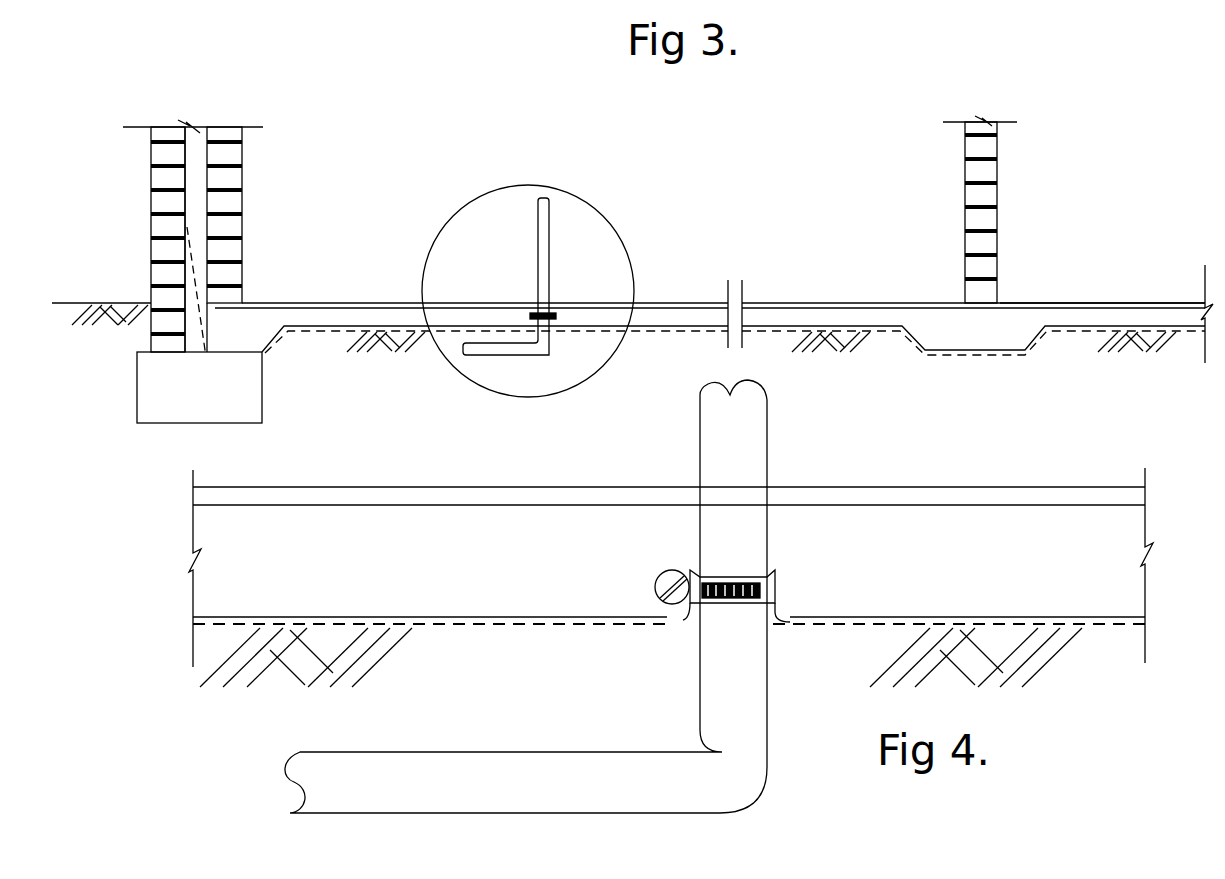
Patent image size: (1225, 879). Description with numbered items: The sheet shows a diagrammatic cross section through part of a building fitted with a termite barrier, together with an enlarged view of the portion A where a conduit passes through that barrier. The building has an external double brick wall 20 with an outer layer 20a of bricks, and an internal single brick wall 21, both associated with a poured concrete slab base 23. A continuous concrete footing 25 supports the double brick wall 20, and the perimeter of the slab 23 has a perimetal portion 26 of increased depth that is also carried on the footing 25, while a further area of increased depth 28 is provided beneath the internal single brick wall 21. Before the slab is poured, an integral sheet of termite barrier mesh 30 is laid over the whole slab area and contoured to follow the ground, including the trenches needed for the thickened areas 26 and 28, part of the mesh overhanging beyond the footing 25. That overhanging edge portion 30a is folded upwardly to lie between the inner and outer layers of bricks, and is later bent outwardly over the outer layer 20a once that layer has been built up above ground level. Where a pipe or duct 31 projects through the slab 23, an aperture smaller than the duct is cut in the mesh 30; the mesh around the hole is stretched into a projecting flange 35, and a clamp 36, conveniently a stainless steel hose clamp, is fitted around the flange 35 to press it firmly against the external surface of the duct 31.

In FIG. 3, the external double brick wall 20 is at (270, 133).
In FIG. 3, the outer layer of bricks 20a is at (165, 224).
In FIG. 3, the internal single brick wall 21 is at (1012, 162).
In FIG. 3, the poured concrete slab base 23 is at (332, 308).
In FIG. 4, the poured concrete slab base 23 is at (508, 520).
In FIG. 3, the continuous concrete footing 25 is at (252, 408).
In FIG. 3, the perimetal portion of increased depth 26 is at (228, 327).
In FIG. 3, the area of increased depth beneath internal wall 28 is at (1035, 302).
In FIG. 3, the termite barrier mesh 30 is at (682, 327).
In FIG. 4, the termite barrier mesh 30 is at (467, 618).
In FIG. 3, the overhanging edge portion of the mesh 30a is at (190, 238).
In FIG. 3, the pipe or duct 31 is at (550, 213).
In FIG. 4, the pipe or duct 31 is at (748, 453).
In FIG. 4, the projecting flange 35 is at (777, 570).
In FIG. 4, the clamp 36 is at (660, 600).
In FIG. 3, the portion A is at (618, 232).